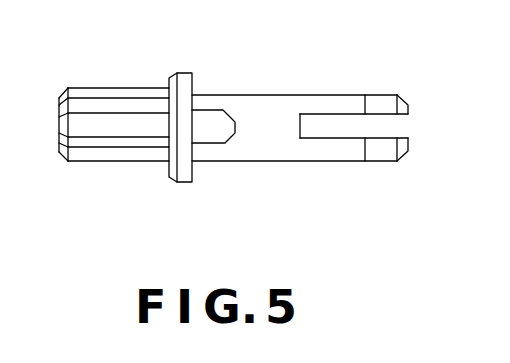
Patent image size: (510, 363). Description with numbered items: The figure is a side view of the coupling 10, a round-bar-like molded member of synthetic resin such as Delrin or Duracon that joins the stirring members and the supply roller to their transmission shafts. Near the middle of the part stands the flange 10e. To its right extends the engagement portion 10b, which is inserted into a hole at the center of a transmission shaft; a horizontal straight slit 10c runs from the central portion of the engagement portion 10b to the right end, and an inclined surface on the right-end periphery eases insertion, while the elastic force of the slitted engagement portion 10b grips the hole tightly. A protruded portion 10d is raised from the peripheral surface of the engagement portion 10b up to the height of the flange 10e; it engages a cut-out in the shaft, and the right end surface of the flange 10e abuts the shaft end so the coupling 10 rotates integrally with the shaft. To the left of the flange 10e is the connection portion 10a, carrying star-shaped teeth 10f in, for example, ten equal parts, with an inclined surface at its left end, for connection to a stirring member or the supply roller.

The coupling 10 is at (252, 132).
The connection portion 10a is at (100, 88).
The engagement portion 10b is at (368, 96).
The slit 10c is at (398, 124).
The protruded portion 10d is at (215, 117).
The flange 10e is at (182, 183).
The star-shaped teeth 10f is at (110, 145).